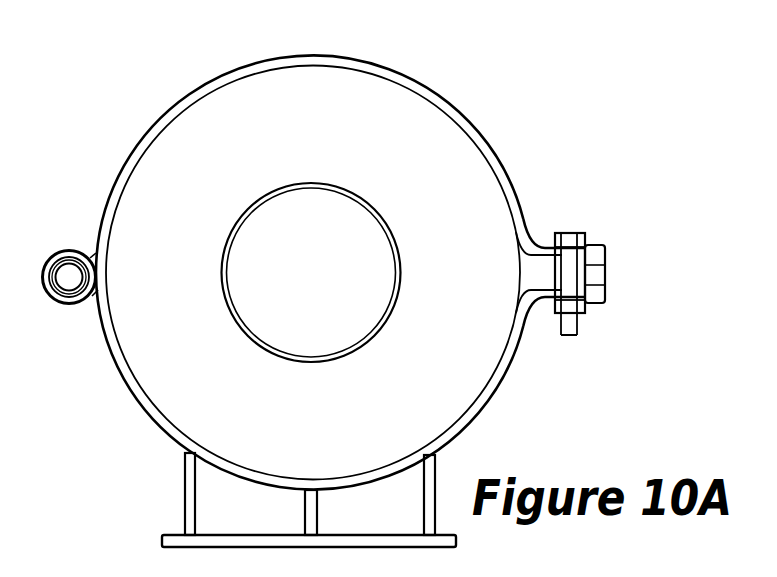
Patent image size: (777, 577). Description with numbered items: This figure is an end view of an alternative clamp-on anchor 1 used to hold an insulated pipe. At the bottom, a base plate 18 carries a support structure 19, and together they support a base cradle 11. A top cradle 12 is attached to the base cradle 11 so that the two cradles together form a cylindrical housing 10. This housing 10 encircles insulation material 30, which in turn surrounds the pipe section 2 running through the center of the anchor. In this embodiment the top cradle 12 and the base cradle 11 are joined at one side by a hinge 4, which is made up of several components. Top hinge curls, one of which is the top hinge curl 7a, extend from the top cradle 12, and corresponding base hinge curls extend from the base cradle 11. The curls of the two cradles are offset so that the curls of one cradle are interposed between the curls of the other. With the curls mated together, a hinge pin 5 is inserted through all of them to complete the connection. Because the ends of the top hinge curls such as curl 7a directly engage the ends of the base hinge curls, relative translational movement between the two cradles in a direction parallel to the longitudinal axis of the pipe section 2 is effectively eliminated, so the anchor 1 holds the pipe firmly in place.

The anchor 1 is at (317, 251).
The pipe section 2 is at (384, 219).
The hinge 4 is at (66, 250).
The hinge pin 5 is at (70, 278).
The top hinge curl 7a is at (70, 251).
The cylindrical housing 10 is at (112, 122).
The base cradle 11 is at (505, 373).
The top cradle 12 is at (309, 251).
The base plate 18 is at (280, 500).
The support structure 19 is at (184, 493).
The insulation material 30 is at (172, 356).